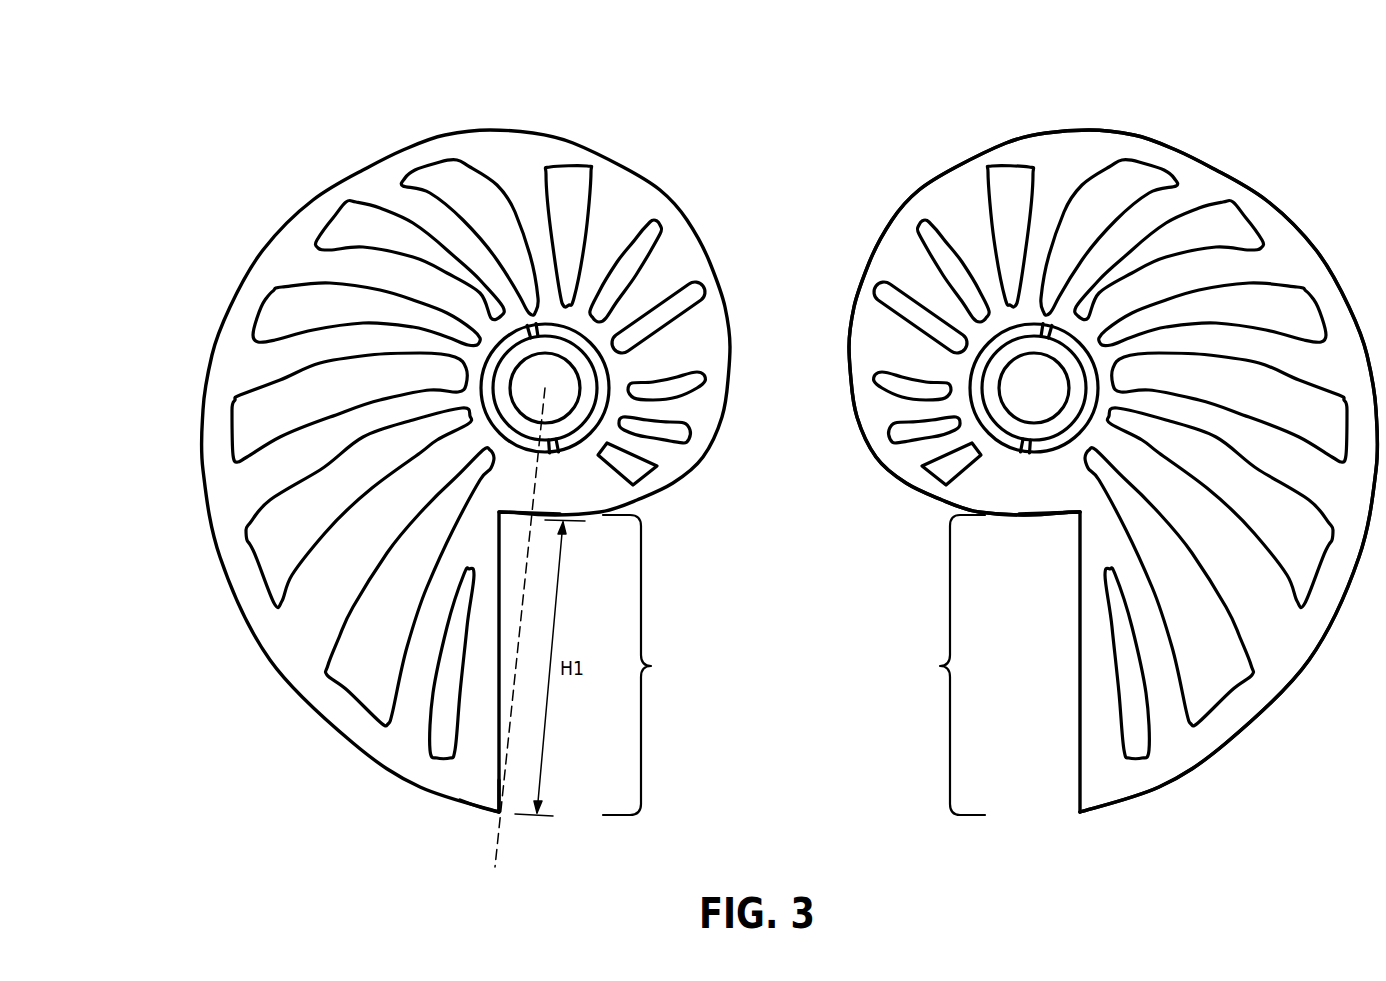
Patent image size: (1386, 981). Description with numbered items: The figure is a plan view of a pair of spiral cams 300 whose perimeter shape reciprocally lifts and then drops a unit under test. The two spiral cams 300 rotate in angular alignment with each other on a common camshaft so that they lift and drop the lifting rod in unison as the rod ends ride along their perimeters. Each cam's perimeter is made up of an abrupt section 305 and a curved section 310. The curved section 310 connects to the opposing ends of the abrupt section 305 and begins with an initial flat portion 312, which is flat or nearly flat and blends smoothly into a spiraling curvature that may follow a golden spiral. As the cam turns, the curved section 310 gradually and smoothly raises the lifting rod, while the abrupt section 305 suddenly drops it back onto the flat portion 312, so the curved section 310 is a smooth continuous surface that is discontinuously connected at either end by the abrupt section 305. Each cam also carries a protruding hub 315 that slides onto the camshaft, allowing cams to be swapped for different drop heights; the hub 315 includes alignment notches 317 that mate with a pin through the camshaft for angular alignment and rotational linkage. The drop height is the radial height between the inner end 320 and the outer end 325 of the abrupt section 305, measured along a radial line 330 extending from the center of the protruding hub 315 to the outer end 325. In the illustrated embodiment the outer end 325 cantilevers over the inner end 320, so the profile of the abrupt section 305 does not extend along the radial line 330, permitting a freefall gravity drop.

The spiral cams 300 is at (1322, 75).
The abrupt section 305 is at (794, 665).
The curved section 310 is at (485, 126).
The flat portion 312 is at (539, 537).
The protruding hub 315 is at (547, 432).
The alignment notch 317 is at (533, 316).
The inner end 320 is at (491, 494).
The outer end 325 is at (491, 817).
The radial line 330 is at (498, 838).